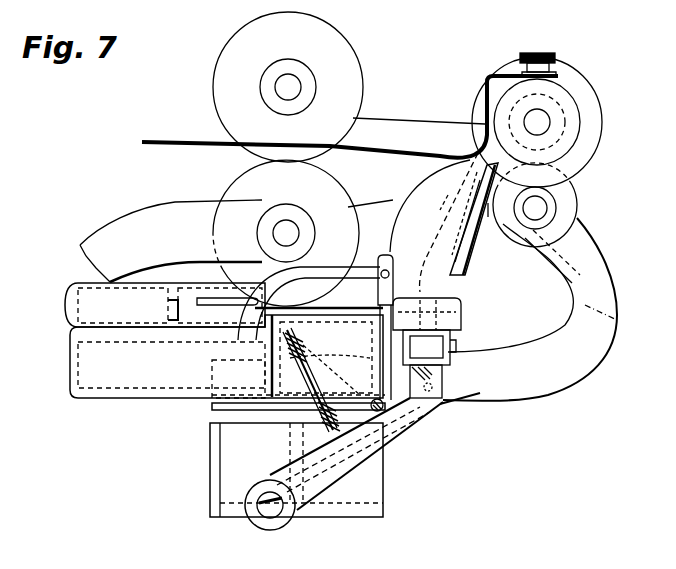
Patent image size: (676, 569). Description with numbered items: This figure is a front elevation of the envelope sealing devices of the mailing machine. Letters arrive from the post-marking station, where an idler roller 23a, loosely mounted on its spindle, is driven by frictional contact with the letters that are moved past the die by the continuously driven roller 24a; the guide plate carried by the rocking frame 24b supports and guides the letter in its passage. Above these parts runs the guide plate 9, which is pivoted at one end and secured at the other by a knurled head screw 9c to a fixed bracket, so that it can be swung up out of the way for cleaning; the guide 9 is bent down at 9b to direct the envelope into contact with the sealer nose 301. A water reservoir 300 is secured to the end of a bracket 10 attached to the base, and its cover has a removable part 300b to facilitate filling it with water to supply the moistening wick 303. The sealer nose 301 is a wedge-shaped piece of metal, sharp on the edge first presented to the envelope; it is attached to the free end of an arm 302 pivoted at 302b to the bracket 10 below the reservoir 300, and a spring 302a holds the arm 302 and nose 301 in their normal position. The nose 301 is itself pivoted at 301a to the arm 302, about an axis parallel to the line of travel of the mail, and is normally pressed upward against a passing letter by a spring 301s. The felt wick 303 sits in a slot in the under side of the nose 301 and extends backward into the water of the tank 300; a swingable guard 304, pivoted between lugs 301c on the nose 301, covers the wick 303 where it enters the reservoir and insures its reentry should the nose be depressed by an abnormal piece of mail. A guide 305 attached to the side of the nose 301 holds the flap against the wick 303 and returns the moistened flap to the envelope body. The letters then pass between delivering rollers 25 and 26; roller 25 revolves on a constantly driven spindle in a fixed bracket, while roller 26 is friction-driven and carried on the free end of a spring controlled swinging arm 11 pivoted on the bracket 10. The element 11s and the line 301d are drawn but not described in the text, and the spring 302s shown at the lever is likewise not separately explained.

The guide plate 9 is at (172, 142).
The bent-down portion of guide 9b is at (419, 132).
The knurled head screw 9c is at (548, 56).
The bracket 10 is at (370, 492).
The swinging arm 11 is at (593, 352).
The frame stop block 11s is at (445, 372).
The idler roller 23a is at (340, 60).
The roller 24a is at (326, 190).
The rocking frame 24b is at (106, 230).
The delivering roller 25 is at (573, 117).
The delivering roller 26 is at (565, 195).
The water reservoir 300 is at (78, 357).
The removable cover part 300b is at (92, 310).
The sealer nose 301 is at (420, 182).
The pivot 301a is at (457, 346).
The lugs 301c is at (387, 264).
The carrier hidden edge 301d is at (458, 188).
The spring 301s is at (462, 305).
The arm 302 is at (382, 452).
The spring 302a is at (400, 410).
The pivot 302b is at (280, 512).
The lever spring 302s is at (300, 340).
The felt wick 303 is at (150, 367).
The swingable guard 304 is at (344, 274).
The guide 305 is at (470, 257).